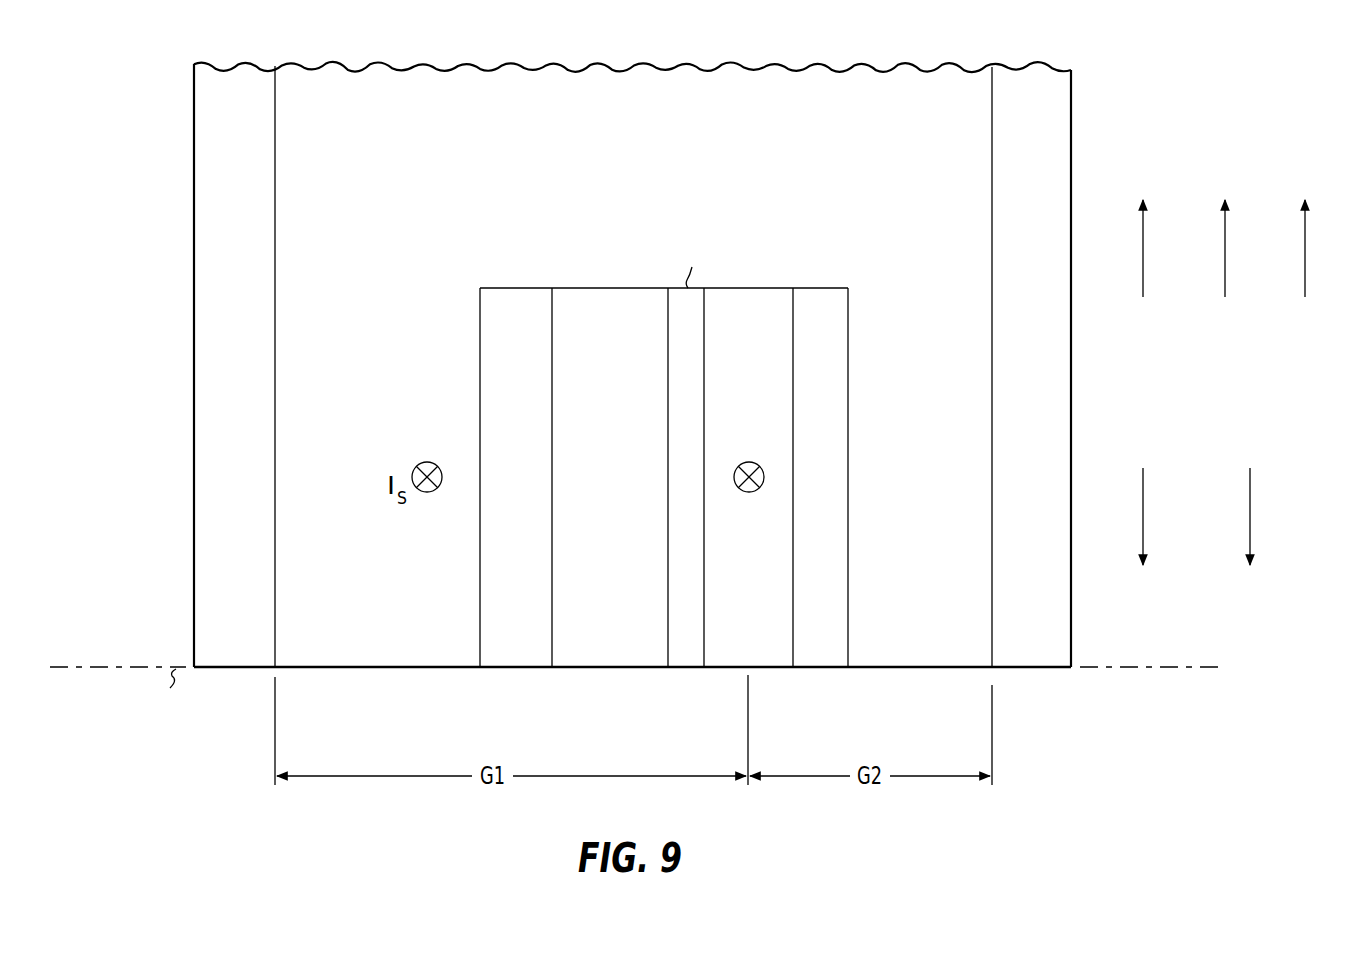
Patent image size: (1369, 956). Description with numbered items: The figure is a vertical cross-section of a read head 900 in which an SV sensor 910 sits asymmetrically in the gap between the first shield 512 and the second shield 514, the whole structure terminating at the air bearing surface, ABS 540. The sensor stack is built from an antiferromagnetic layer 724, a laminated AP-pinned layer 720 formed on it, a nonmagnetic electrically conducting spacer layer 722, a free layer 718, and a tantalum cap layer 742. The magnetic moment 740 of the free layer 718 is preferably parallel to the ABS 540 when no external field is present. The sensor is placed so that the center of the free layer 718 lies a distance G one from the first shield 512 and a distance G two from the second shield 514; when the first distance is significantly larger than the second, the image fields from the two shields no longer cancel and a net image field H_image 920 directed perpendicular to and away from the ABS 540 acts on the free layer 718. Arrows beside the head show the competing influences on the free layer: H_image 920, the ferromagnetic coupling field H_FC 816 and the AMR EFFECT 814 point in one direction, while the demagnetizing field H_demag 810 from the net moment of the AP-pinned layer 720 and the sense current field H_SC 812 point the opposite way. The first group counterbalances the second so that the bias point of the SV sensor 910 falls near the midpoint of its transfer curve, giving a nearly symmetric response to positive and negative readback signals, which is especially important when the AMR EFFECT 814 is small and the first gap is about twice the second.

The read head 900 is at (1063, 775).
The SV sensor 910 is at (598, 238).
The first shield layer 512 is at (200, 397).
The second shield layer 514 is at (1066, 396).
The ABS 540 is at (118, 666).
The antiferromagnetic layer 724 is at (516, 670).
The AP-pinned layer 720 is at (612, 670).
The spacer layer 722 is at (686, 670).
The free layer 718 is at (776, 670).
The cap layer 742 is at (829, 670).
The magnetic moment of the free layer 740 is at (750, 493).
The H_FC 816 is at (1145, 232).
The AMR EFFECT 814 is at (1227, 250).
The H_image 920 is at (1307, 232).
The H_demag 810 is at (1145, 513).
The H_SC 812 is at (1252, 513).